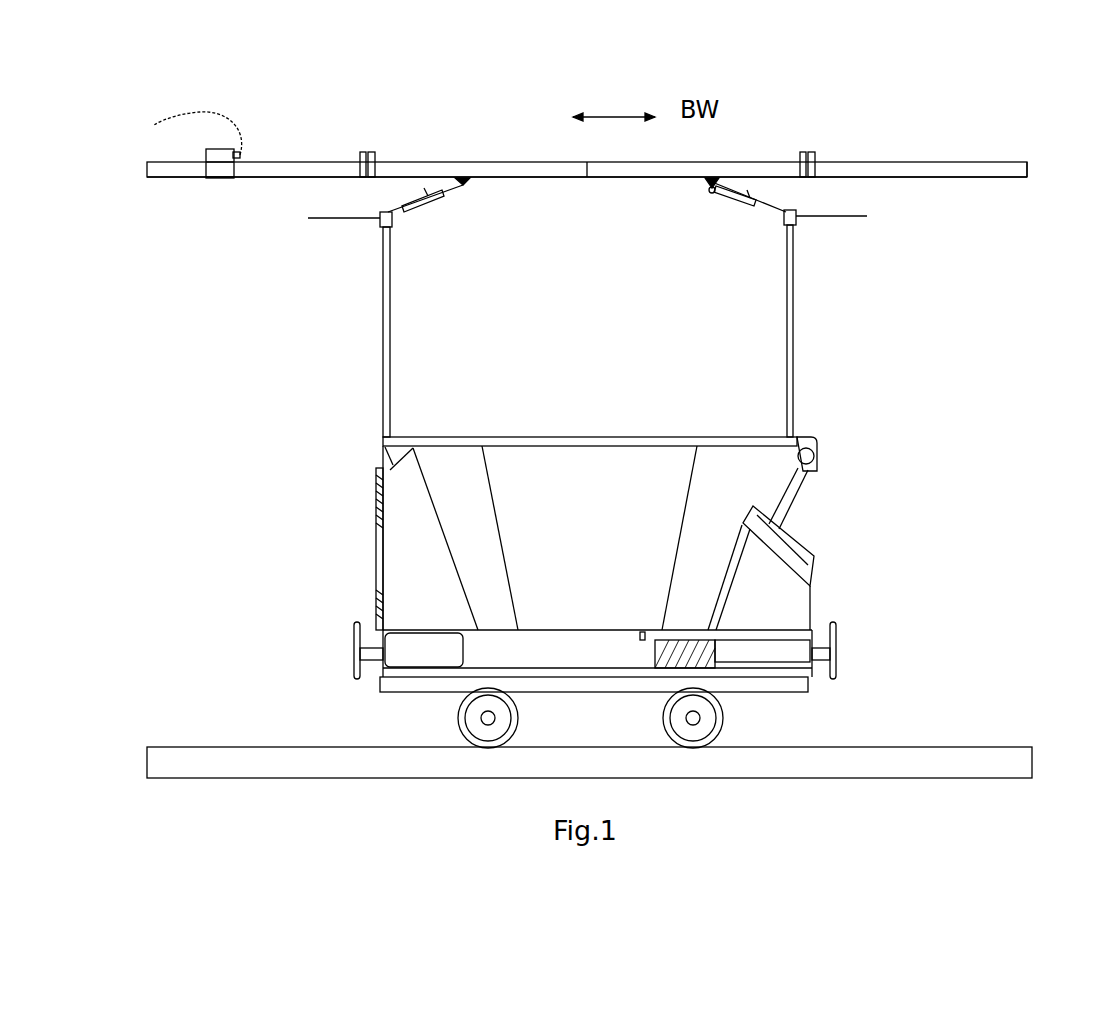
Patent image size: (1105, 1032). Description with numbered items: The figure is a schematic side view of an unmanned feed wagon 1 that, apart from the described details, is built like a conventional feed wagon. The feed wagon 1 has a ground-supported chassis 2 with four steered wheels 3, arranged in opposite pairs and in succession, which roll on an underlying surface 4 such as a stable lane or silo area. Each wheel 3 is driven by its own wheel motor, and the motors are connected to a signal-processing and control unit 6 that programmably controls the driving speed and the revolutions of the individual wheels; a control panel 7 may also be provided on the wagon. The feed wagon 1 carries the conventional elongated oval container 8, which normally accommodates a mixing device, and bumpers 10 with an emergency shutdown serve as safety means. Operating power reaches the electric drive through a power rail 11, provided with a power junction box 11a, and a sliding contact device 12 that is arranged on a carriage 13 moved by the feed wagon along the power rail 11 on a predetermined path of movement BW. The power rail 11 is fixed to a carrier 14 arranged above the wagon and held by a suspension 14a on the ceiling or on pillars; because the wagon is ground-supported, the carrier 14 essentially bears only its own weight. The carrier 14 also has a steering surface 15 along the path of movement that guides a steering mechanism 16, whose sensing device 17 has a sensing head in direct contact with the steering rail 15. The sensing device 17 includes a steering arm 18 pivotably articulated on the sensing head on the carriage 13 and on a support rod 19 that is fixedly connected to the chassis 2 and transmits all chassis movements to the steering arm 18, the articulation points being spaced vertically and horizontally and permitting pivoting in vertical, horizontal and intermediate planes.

The feed wagon 1 is at (968, 407).
The chassis 2 is at (890, 714).
The steered wheels 3 is at (708, 739).
The underlying surface 4 is at (993, 747).
The signal-processing and control unit 6 is at (416, 555).
The control panel 7 is at (376, 500).
The container 8 is at (680, 437).
The bumpers 10 is at (354, 636).
The power rail 11 is at (921, 178).
The power junction box 11a is at (213, 182).
The sliding contact device 12 is at (705, 180).
The carriage 13 is at (710, 192).
The carrier 14 is at (887, 162).
The suspension 14a is at (366, 150).
The steering surface 15 is at (995, 170).
The steering mechanism 16 is at (840, 264).
The sensing device 17 is at (655, 228).
The steering arm 18 is at (773, 207).
The support rod 19 is at (793, 330).